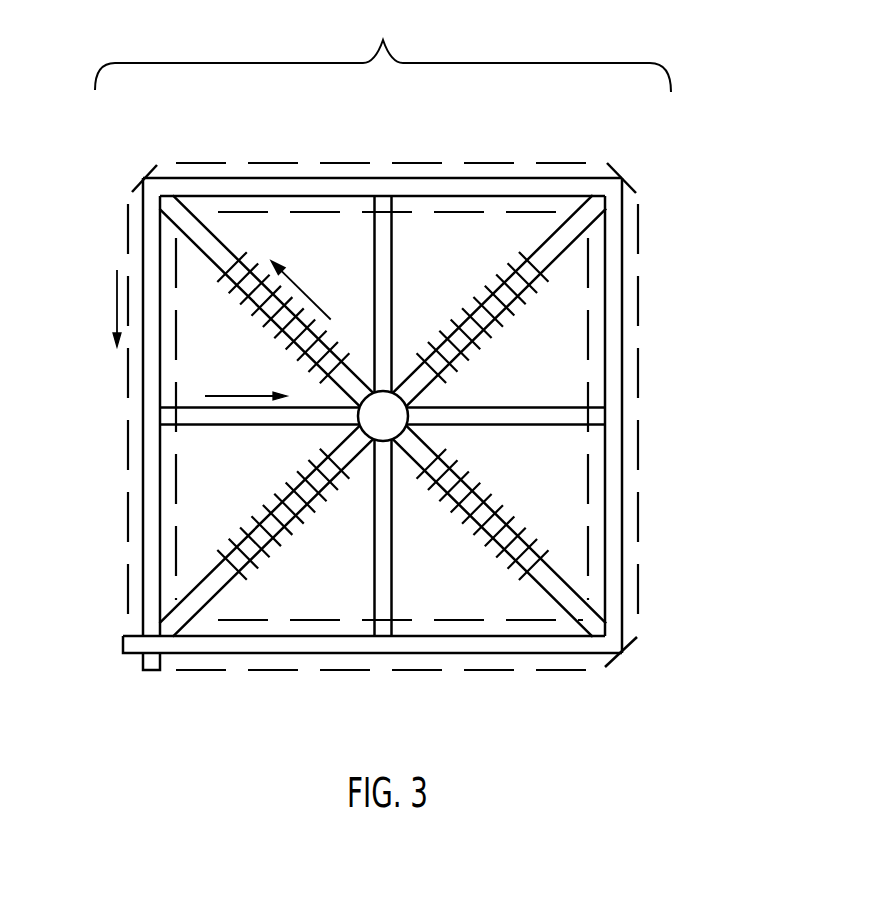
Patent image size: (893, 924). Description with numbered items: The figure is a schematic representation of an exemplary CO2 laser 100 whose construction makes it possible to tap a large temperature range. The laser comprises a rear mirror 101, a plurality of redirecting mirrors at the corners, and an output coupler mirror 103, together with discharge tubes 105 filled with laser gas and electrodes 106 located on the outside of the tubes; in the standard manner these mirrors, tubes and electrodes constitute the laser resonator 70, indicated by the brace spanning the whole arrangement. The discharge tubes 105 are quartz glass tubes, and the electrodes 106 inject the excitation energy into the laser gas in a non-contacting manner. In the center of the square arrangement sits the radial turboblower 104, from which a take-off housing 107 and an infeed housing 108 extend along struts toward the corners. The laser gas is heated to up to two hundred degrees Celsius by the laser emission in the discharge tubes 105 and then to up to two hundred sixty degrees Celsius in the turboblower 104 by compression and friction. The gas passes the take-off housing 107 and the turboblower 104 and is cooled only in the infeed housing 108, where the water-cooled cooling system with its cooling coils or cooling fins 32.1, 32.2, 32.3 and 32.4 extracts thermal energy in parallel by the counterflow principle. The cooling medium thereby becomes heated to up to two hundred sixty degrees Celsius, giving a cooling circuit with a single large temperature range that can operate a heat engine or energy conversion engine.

The laser resonator 70 is at (383, 51).
The heat sink / cooling structure 100 is at (695, 267).
The rear mirror 101 is at (145, 673).
The output coupler mirror 103 is at (123, 641).
The turboblower 104 is at (402, 400).
The discharge tube 105 is at (618, 342).
The electrodes 106 is at (483, 672).
The take-off housing 107 is at (382, 285).
The infeed housing 108 is at (540, 273).
The cooling fins 32.1 is at (247, 307).
The cooling fins 32.2 is at (287, 537).
The cooling fins 32.3 is at (477, 537).
The cooling fins 32.4 is at (480, 293).